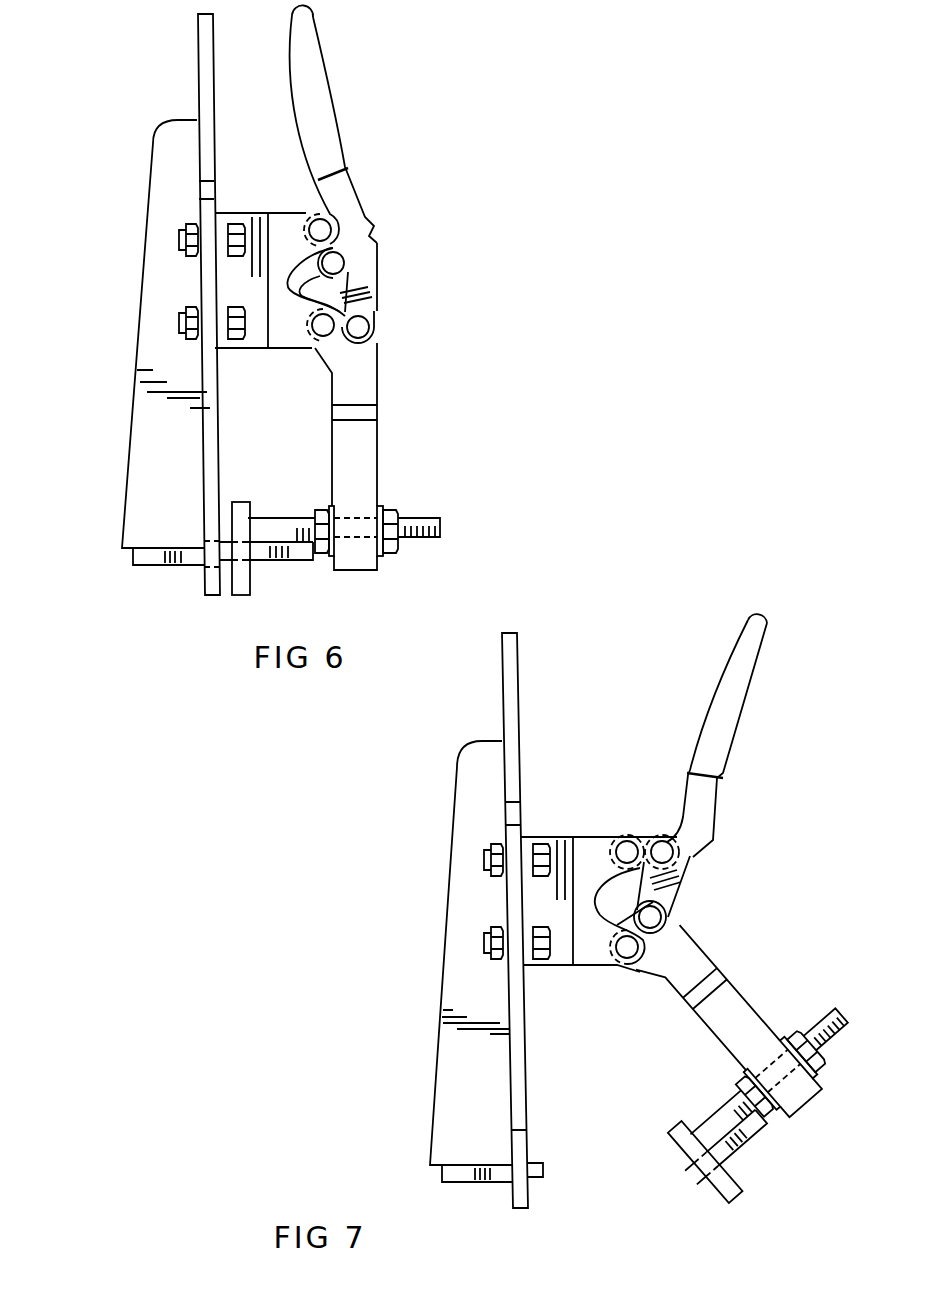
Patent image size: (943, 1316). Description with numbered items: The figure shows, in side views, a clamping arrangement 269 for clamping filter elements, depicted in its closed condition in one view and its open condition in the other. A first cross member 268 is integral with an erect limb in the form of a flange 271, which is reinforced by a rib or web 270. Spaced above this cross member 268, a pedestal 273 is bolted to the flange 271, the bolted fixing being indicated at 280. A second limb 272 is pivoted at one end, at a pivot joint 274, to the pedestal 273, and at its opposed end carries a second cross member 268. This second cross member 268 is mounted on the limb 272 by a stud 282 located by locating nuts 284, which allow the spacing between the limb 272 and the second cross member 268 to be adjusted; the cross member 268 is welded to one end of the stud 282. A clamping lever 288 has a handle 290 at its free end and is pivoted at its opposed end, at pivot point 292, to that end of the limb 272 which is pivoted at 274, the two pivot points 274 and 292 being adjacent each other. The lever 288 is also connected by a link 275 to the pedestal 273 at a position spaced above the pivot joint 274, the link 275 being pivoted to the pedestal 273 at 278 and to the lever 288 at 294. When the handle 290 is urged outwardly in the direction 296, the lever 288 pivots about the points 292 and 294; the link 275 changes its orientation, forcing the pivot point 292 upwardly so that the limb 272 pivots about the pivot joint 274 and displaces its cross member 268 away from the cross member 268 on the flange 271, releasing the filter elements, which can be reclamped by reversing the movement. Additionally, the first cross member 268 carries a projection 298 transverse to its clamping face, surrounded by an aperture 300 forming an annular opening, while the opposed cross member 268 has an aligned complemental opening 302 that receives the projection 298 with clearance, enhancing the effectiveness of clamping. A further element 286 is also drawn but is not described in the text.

In FIG. 6, the cross member 268 is at (206, 584).
In FIG. 7, the cross member 268 is at (733, 1197).
In FIG. 6, the clamping arrangement 269 is at (128, 66).
In FIG. 7, the clamping arrangement 269 is at (661, 585).
In FIG. 6, the rib or web 270 is at (147, 447).
In FIG. 7, the rib or web 270 is at (442, 1022).
In FIG. 6, the flange 271 is at (212, 400).
In FIG. 7, the flange 271 is at (522, 1020).
In FIG. 6, the second limb 272 is at (367, 460).
In FIG. 7, the second limb 272 is at (730, 1003).
In FIG. 6, the pedestal 273 is at (263, 211).
In FIG. 7, the pedestal 273 is at (560, 830).
In FIG. 6, the pivot joint 274 is at (313, 345).
In FIG. 7, the pivot joint 274 is at (627, 963).
In FIG. 6, the link 275 is at (350, 240).
In FIG. 7, the link 275 is at (647, 832).
In FIG. 6, the pivot 278 is at (337, 214).
In FIG. 7, the pivot 278 is at (620, 832).
In FIG. 6, the bolting 280 is at (181, 218).
In FIG. 7, the bolting 280 is at (484, 840).
In FIG. 6, the stud 282 is at (413, 518).
In FIG. 7, the stud 282 is at (822, 1025).
In FIG. 6, the locating nuts 284 is at (321, 558).
In FIG. 7, the locating nuts 284 is at (830, 1070).
In FIG. 6, the connecting rod 286 is at (267, 503).
In FIG. 7, the connecting rod 286 is at (686, 1116).
In FIG. 6, the clamping lever 288 is at (340, 107).
In FIG. 7, the clamping lever 288 is at (750, 698).
In FIG. 6, the handle 290 is at (307, 63).
In FIG. 7, the handle 290 is at (737, 660).
In FIG. 6, the pivot point 292 is at (375, 320).
In FIG. 7, the pivot point 292 is at (678, 913).
In FIG. 6, the pivot 294 is at (352, 258).
In FIG. 7, the pivot 294 is at (689, 858).
In FIG. 7, the outward urging direction 296 is at (713, 601).
In FIG. 7, the projection 298 is at (543, 1168).
In FIG. 7, the aperture 300 is at (525, 1186).
In FIG. 7, the complemental opening 302 is at (716, 1203).